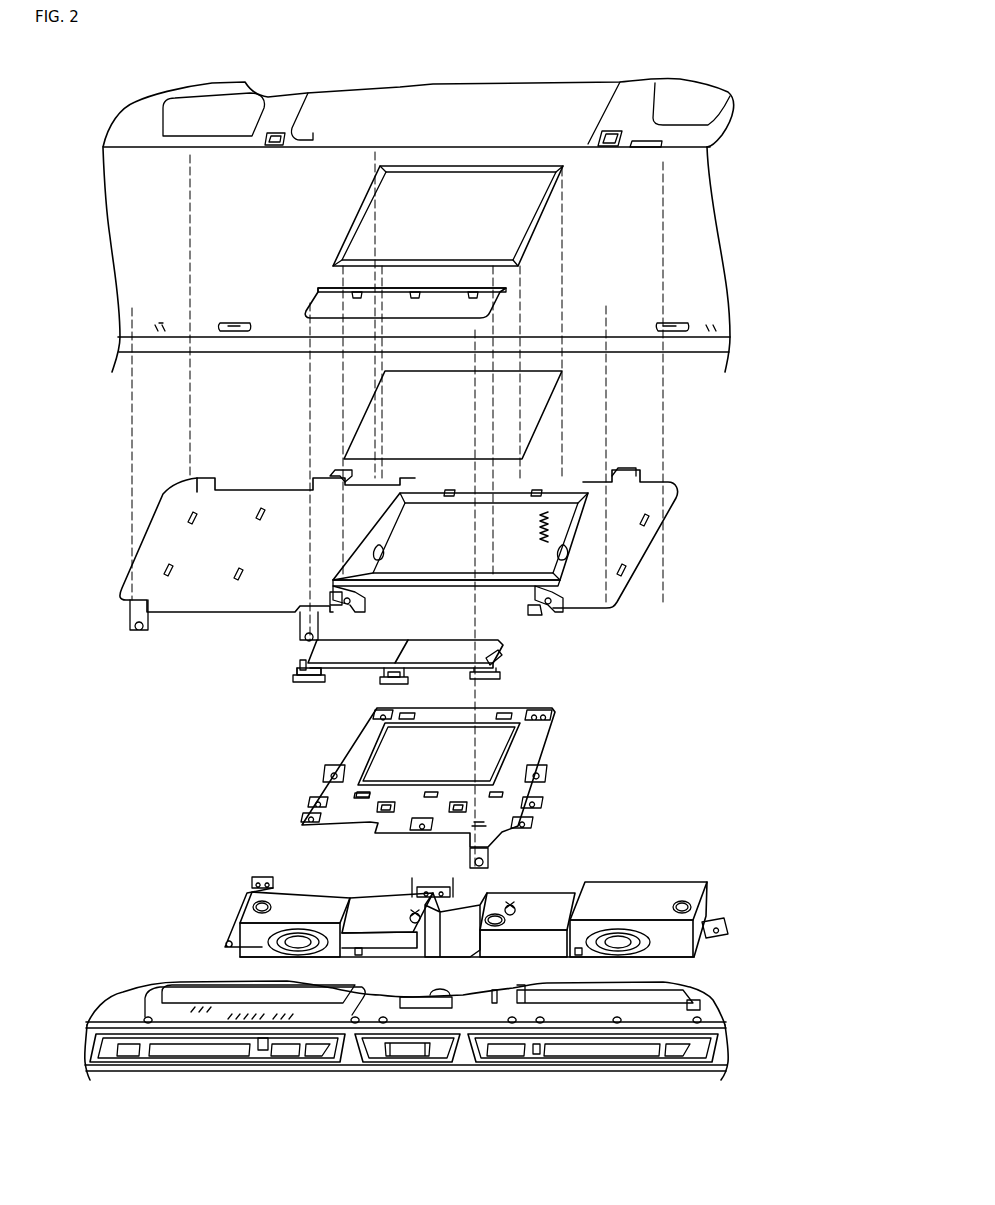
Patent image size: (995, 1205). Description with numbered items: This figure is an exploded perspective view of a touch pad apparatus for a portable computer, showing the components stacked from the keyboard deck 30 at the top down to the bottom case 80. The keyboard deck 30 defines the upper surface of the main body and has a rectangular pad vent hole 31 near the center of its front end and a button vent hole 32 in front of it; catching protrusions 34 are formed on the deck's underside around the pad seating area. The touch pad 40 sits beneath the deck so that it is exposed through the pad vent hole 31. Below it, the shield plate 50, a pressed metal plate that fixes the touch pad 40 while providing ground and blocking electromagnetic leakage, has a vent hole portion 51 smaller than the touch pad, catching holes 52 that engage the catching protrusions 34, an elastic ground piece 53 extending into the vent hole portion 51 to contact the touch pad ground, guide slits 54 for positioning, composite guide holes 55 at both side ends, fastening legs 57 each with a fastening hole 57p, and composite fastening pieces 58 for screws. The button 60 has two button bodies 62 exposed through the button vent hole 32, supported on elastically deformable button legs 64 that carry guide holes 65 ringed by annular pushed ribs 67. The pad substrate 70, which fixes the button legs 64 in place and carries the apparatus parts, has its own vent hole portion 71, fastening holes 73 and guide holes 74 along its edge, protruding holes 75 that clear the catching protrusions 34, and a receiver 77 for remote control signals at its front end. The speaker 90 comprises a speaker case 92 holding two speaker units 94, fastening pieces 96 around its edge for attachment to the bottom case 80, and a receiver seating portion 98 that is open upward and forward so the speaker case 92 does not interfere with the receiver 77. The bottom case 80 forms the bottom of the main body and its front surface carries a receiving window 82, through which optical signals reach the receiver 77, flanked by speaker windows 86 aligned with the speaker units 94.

The keyboard deck 30 is at (104, 284).
The pad vent hole 31 is at (463, 222).
The button vent hole 32 is at (405, 329).
The catching protrusions 34 is at (357, 296).
The touch pad 40 is at (360, 397).
The shield plate 50 is at (384, 539).
The vent hole portion 51 is at (528, 543).
The catching holes 52 is at (450, 490).
The ground piece 53 is at (548, 512).
The guide slits 54 is at (260, 512).
The composite guide holes 55 is at (378, 552).
The fastening legs 57 is at (340, 474).
The fastening hole 57p is at (352, 476).
The composite fastening pieces 58 is at (365, 596).
The button 60 is at (379, 657).
The button bodies 62 is at (430, 642).
The button legs 64 is at (300, 682).
The guide holes 65 is at (300, 663).
The pushed ribs 67 is at (305, 687).
The pad substrate 70 is at (397, 788).
The vent hole portion 71 is at (445, 763).
The fastening holes 73 is at (375, 714).
The guide holes 74 is at (325, 770).
The protruding holes 75 is at (425, 797).
The receiver 77 is at (488, 856).
The bottom case 80 is at (414, 1030).
The receiving window 82 is at (415, 1055).
The speaker windows 86 is at (225, 1057).
The speaker 90 is at (452, 914).
The speaker case 92 is at (395, 900).
The speaker units 94 is at (300, 945).
The fastening pieces 96 is at (238, 918).
The receiver seating portion 98 is at (460, 940).